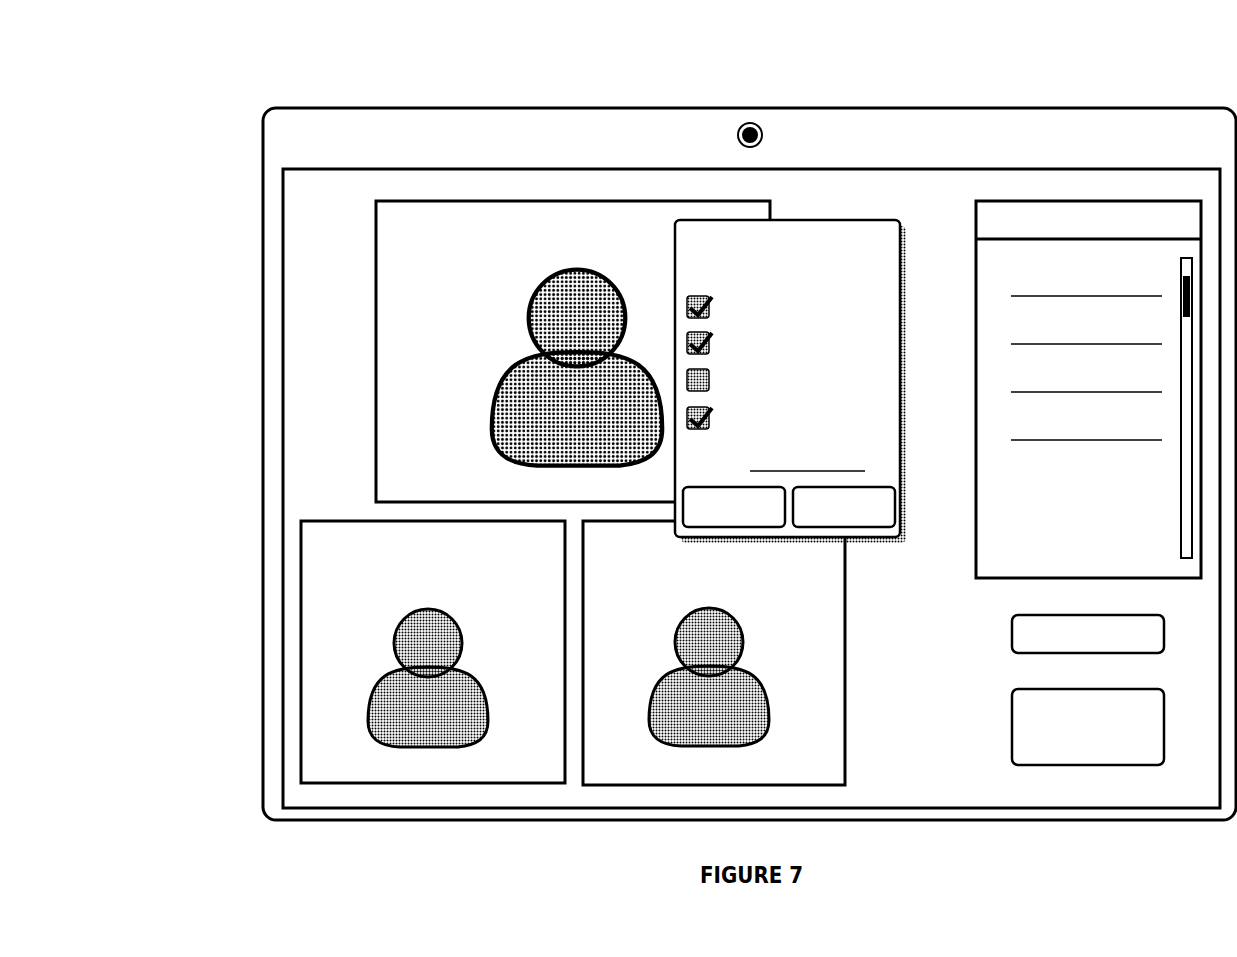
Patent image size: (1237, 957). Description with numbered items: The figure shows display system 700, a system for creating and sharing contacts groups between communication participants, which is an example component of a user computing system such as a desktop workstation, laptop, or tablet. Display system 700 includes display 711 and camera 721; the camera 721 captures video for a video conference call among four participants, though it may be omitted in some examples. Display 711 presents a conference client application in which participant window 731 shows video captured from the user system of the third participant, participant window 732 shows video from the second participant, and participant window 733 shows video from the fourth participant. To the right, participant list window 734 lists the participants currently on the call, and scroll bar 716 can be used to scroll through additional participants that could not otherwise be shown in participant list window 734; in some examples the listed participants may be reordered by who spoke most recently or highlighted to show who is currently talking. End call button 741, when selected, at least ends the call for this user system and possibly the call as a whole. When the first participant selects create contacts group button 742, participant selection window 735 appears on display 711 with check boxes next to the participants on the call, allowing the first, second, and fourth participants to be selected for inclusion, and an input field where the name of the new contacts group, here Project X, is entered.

The display system 700 is at (208, 76).
The display 711 is at (442, 168).
The camera 721 is at (739, 132).
The participant window 731 is at (375, 265).
The participant window 732 is at (355, 520).
The participant window 733 is at (845, 603).
The participant list window 734 is at (974, 301).
The participant selection window 735 is at (820, 220).
The scroll bar 716 is at (1180, 511).
The end call button 741 is at (1012, 642).
The create contacts group button 742 is at (1012, 735).